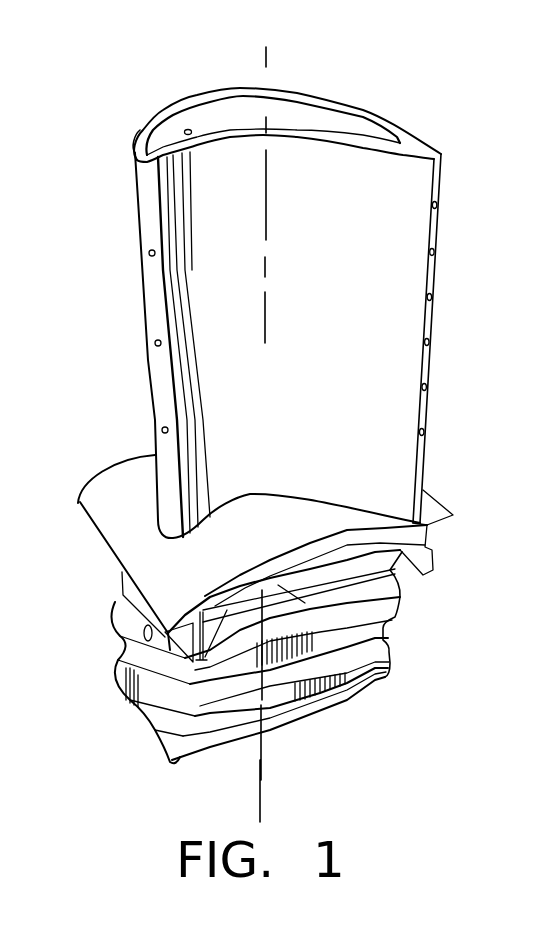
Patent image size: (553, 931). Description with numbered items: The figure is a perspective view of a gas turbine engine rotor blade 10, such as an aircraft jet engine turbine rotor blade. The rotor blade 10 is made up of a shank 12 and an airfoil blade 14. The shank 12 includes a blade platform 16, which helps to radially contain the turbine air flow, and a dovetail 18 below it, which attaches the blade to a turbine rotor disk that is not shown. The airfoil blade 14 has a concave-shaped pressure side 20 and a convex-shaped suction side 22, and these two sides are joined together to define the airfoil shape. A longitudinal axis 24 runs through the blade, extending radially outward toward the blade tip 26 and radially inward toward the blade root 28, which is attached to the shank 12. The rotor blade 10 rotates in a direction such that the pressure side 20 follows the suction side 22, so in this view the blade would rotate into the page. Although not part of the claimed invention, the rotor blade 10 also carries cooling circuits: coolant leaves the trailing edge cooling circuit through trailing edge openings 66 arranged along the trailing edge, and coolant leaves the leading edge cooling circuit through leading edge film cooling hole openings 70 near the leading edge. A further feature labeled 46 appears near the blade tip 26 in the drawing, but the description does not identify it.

The rotor blade 10 is at (138, 343).
The shank 12 is at (376, 559).
The airfoil blade 14 is at (392, 215).
The blade platform 16 is at (128, 528).
The dovetail 18 is at (133, 652).
The pressure side 20 is at (388, 350).
The suction side 22 is at (300, 95).
The longitudinal axis 24 is at (266, 65).
The blade tip 26 is at (333, 127).
The blade root 28 is at (388, 490).
The tip cooling hole 46 is at (188, 128).
The trailing edge openings 66 is at (436, 254).
The leading edge film cooling hole openings 70 is at (152, 250).